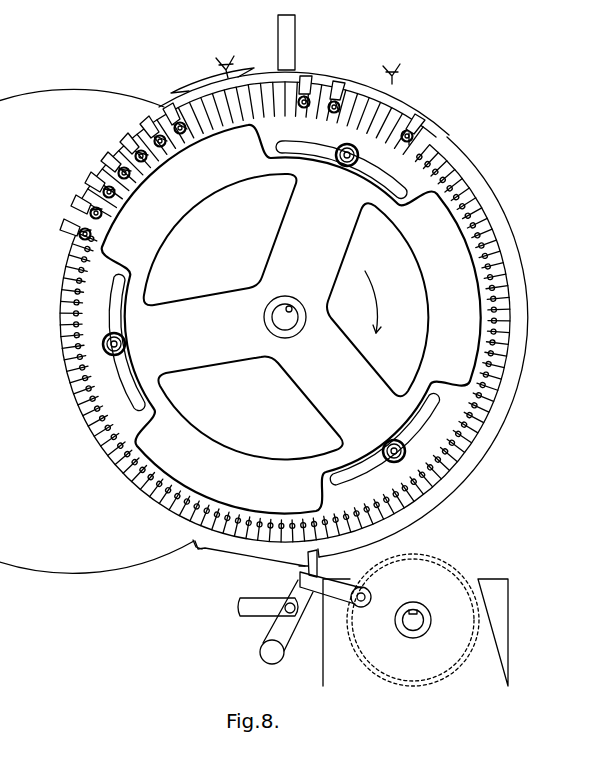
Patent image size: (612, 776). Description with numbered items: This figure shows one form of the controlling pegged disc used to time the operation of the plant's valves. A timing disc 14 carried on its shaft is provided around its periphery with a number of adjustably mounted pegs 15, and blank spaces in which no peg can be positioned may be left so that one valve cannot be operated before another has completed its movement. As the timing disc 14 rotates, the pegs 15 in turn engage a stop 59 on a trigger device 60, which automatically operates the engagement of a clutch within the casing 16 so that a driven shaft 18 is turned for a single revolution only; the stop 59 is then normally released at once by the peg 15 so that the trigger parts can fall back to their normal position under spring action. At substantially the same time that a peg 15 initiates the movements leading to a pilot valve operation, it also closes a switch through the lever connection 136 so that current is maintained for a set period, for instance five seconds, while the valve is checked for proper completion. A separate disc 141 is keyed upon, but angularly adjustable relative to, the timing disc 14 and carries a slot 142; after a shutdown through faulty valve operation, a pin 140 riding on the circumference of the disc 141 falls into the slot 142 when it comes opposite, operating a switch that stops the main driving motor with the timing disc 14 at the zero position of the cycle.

The timing disc 14 is at (443, 233).
The pegs 15 is at (356, 78).
The casing 16 is at (497, 585).
The driven shaft 18 is at (417, 620).
The stop 59 is at (303, 567).
The trigger device 60 is at (323, 588).
The lever connection 136 is at (256, 607).
The pin 140 is at (295, 50).
The disc 141 is at (78, 433).
The slot 142 is at (200, 548).